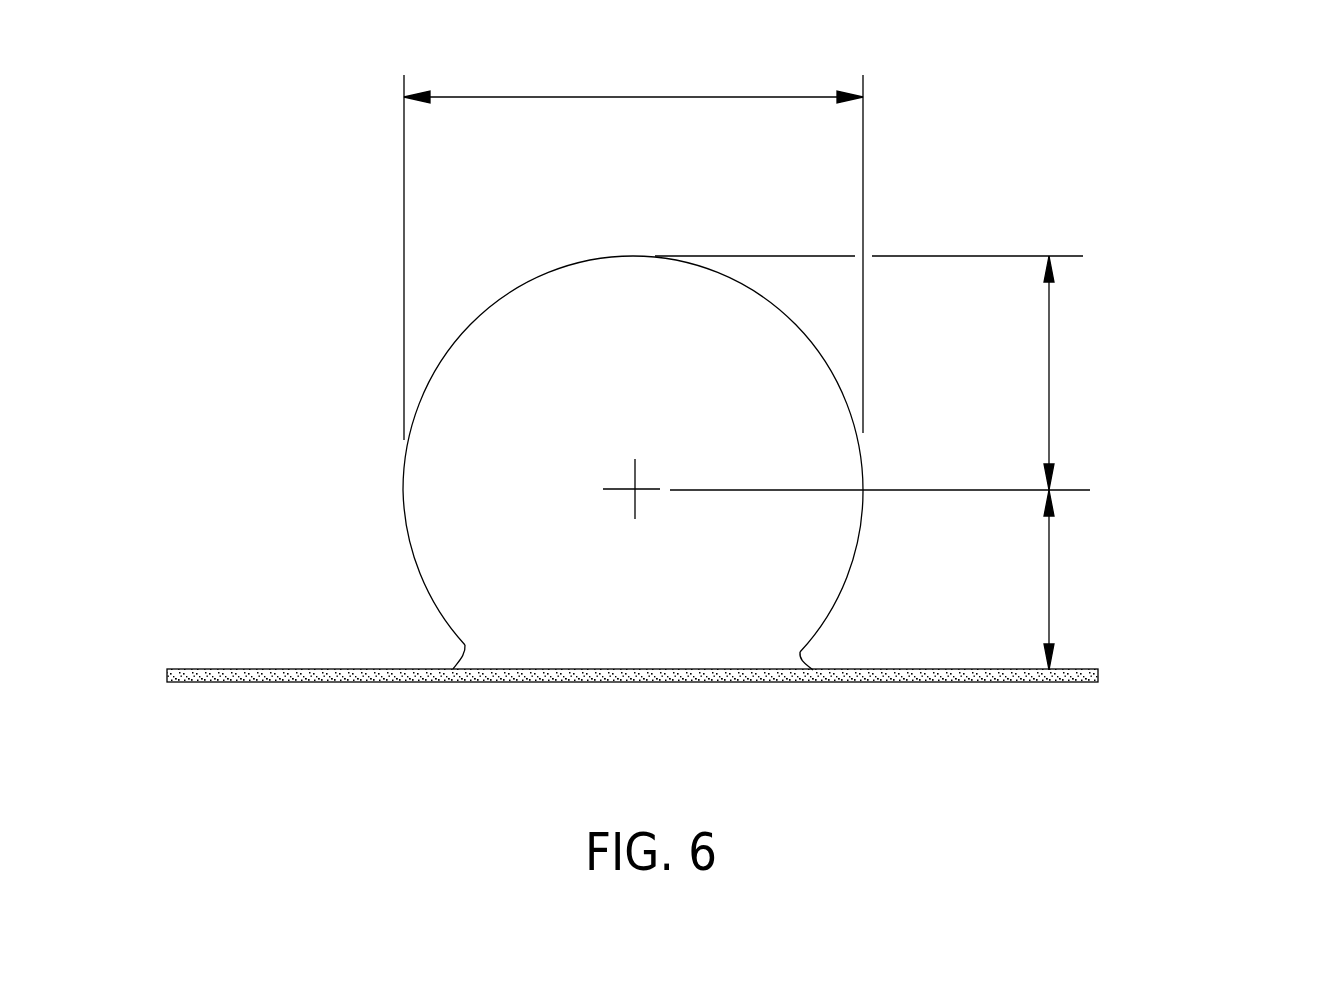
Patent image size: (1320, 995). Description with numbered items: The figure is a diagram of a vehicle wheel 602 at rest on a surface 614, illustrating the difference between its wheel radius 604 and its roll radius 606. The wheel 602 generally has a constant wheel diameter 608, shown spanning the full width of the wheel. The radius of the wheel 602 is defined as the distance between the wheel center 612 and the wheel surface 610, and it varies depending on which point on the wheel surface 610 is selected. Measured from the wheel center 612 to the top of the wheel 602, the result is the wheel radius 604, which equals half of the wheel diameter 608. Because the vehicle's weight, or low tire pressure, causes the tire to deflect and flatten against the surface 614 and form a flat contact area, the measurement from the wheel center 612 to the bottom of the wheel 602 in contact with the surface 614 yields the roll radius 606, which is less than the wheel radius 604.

The vehicle wheel 602 is at (564, 445).
The wheel radius 604 is at (986, 373).
The roll radius 606 is at (991, 580).
The wheel diameter 608 is at (633, 226).
The wheel surface 610 is at (497, 300).
The wheel center 612 is at (633, 487).
The surface 614 is at (298, 668).